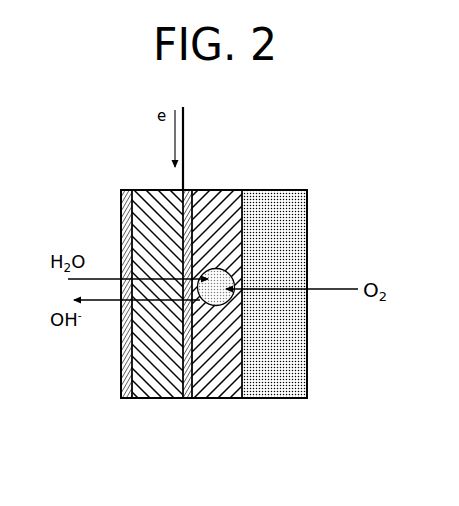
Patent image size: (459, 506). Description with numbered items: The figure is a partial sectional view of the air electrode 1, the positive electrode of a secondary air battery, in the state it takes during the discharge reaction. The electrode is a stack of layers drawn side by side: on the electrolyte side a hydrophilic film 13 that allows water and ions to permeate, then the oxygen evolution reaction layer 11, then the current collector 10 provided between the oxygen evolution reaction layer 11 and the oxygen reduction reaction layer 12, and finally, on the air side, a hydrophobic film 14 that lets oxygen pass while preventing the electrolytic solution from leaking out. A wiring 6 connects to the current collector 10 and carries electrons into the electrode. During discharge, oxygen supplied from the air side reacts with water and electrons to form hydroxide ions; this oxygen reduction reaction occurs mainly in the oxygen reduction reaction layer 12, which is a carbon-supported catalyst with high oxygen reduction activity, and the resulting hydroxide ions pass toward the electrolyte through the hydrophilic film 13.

The air electrode 1 is at (45, 147).
The wiring 6 is at (184, 146).
The current collector 10 is at (182, 398).
The oxygen evolution reaction layer 11 is at (160, 398).
The oxygen reduction reaction layer 12 is at (215, 398).
The hydrophilic film 13 is at (128, 398).
The hydrophobic film 14 is at (270, 398).